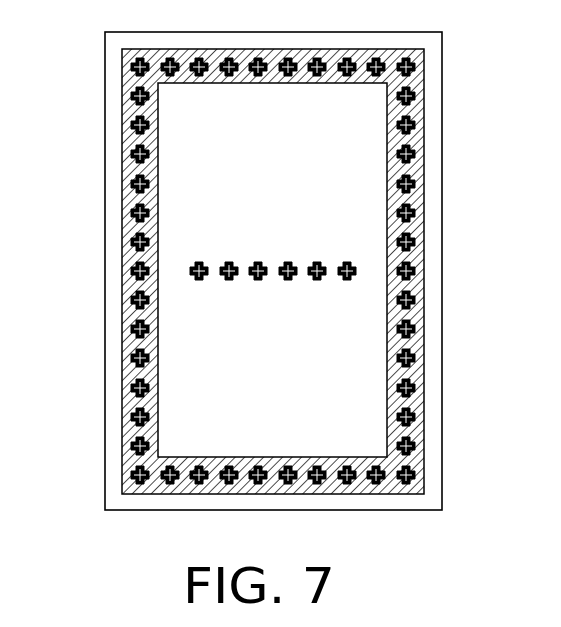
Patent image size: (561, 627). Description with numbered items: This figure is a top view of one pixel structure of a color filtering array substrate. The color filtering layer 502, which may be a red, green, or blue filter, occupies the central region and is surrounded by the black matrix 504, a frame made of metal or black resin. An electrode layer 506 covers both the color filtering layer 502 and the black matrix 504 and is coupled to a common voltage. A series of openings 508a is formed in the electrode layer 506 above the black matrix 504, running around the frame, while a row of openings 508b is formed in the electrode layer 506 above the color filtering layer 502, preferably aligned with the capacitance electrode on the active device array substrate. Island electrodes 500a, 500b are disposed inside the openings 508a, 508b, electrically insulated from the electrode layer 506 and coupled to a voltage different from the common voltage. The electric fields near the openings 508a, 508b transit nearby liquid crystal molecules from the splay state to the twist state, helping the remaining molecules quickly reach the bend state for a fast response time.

The island electrode 500a is at (130, 78).
The island electrode 500b is at (192, 278).
The color filtering layer 502 is at (353, 187).
The black matrix 504 is at (430, 257).
The electrode layer 506 is at (442, 412).
The opening 508a is at (132, 66).
The opening 508b is at (193, 266).